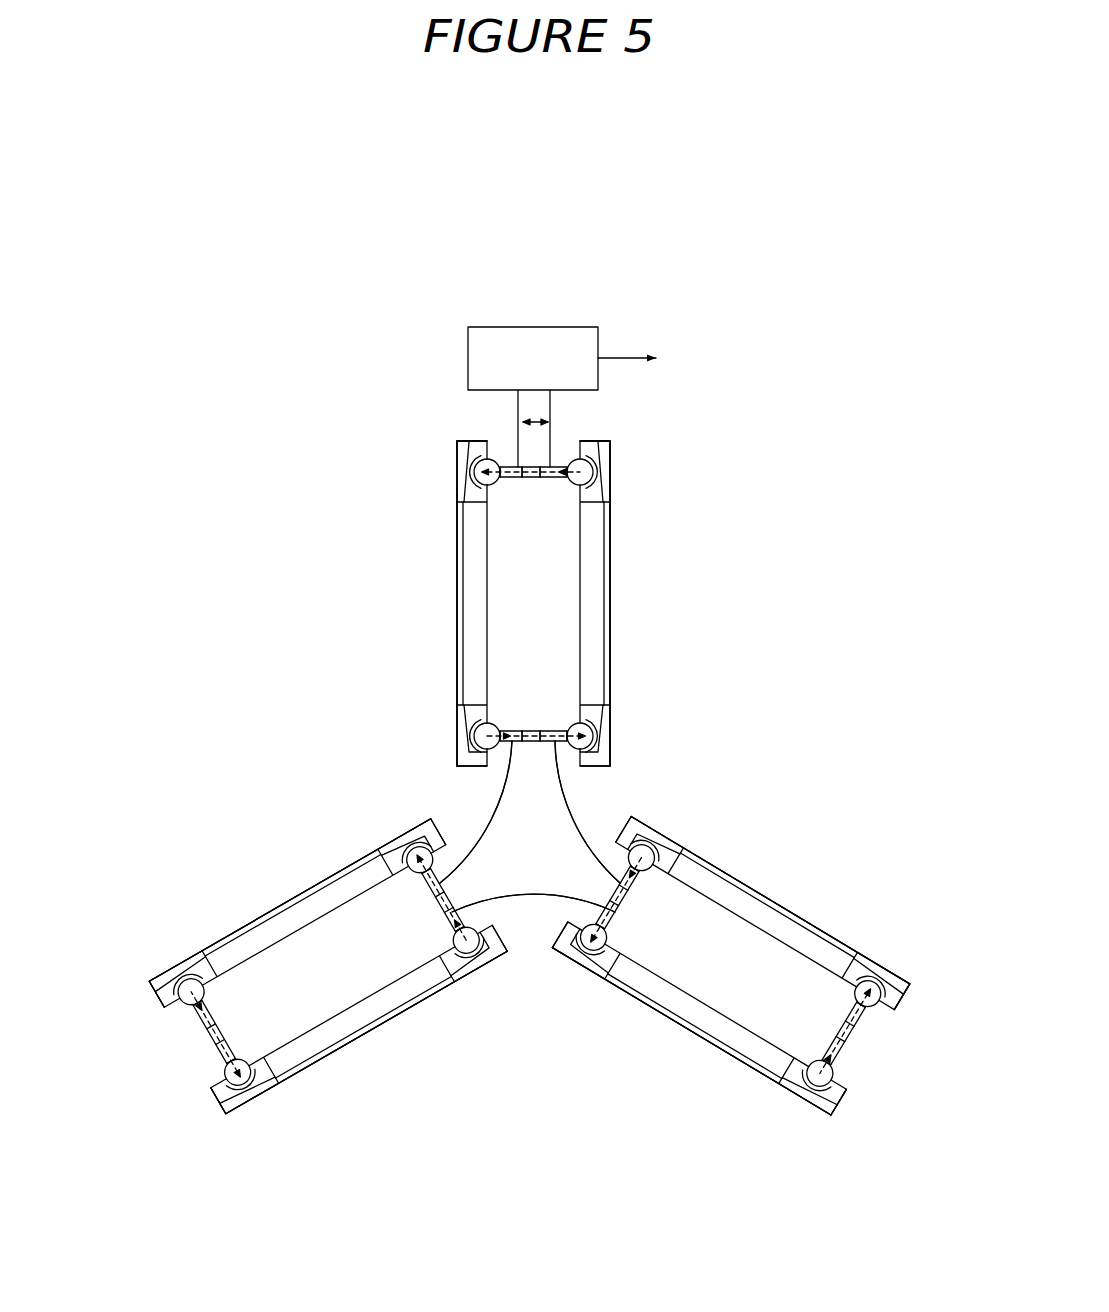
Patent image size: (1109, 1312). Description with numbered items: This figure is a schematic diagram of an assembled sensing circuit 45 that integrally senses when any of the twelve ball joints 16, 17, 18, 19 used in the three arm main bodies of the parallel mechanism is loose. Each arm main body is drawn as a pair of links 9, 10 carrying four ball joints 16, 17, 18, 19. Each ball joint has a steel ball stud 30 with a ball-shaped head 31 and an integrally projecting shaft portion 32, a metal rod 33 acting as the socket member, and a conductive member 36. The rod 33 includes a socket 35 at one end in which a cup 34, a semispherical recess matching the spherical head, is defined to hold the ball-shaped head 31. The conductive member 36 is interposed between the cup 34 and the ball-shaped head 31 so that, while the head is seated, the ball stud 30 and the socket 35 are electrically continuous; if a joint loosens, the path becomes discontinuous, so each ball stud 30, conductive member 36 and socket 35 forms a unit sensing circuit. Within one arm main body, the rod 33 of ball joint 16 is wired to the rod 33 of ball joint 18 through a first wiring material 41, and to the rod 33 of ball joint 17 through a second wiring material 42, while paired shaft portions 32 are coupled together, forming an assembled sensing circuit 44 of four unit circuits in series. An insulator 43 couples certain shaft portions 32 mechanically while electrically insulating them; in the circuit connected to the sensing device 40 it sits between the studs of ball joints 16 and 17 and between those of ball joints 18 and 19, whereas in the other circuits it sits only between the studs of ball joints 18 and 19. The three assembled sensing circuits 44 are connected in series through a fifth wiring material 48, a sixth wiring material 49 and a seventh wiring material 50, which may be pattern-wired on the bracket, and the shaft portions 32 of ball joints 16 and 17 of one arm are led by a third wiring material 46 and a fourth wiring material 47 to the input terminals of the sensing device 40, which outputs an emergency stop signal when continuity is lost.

The first guide rail 9 is at (457, 617).
The second guide rail 10 is at (611, 617).
The ball joint 16 is at (452, 451).
The ball joint 17 is at (614, 450).
The ball joint 18 is at (457, 757).
The ball joint 19 is at (612, 757).
The ball stud 30 is at (512, 466).
The ball-shaped head 31 is at (494, 489).
The shaft portion 32 is at (550, 481).
The rod 33 is at (453, 488).
The cup 34 is at (468, 455).
The socket 35 is at (456, 468).
The conductive member 36 is at (462, 456).
The sensing device 40 is at (468, 350).
The first wiring material 41 is at (462, 580).
The second wiring material 42 is at (605, 580).
The insulator 43 is at (440, 881).
The assembled sensing circuit 44 is at (672, 442).
The assembled sensing circuit 45 is at (746, 682).
The third wiring material 46 is at (517, 396).
The fourth wiring material 47 is at (551, 397).
The fifth wiring material 48 is at (488, 823).
The sixth wiring material 49 is at (536, 893).
The seventh wiring material 50 is at (563, 803).